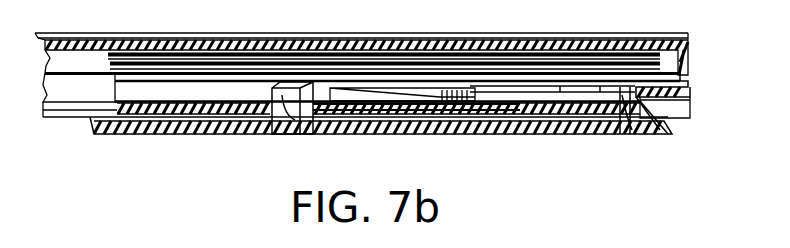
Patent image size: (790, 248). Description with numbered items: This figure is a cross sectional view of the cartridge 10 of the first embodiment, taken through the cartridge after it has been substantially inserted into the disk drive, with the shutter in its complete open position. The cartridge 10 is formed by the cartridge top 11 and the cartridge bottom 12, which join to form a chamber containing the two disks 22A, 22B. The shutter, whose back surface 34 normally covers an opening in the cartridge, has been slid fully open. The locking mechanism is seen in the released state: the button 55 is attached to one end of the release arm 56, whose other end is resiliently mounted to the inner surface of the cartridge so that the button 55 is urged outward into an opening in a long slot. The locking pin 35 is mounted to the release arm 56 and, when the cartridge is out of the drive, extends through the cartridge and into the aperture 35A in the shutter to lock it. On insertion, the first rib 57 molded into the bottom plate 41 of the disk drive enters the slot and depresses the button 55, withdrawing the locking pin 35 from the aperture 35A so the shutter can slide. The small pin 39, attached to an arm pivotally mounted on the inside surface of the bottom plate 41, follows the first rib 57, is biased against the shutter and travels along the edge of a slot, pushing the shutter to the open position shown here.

The cartridge 10 is at (695, 81).
The cartridge top 11 is at (688, 46).
The cartridge bottom 12 is at (690, 110).
The disk 22A is at (108, 56).
The disk 22B is at (112, 74).
The back surface of shutter 34 is at (208, 134).
The locking pin 35 is at (450, 110).
The aperture 35A is at (427, 103).
The pin 39 is at (307, 134).
The bottom plate 41 is at (268, 134).
The button 55 is at (664, 134).
The release arm 56 is at (527, 83).
The first rib 57 is at (640, 132).